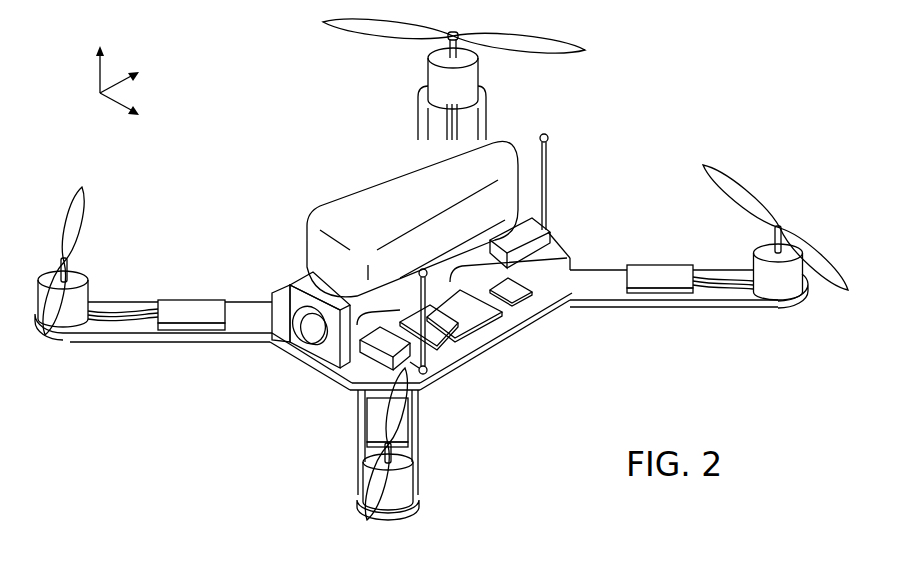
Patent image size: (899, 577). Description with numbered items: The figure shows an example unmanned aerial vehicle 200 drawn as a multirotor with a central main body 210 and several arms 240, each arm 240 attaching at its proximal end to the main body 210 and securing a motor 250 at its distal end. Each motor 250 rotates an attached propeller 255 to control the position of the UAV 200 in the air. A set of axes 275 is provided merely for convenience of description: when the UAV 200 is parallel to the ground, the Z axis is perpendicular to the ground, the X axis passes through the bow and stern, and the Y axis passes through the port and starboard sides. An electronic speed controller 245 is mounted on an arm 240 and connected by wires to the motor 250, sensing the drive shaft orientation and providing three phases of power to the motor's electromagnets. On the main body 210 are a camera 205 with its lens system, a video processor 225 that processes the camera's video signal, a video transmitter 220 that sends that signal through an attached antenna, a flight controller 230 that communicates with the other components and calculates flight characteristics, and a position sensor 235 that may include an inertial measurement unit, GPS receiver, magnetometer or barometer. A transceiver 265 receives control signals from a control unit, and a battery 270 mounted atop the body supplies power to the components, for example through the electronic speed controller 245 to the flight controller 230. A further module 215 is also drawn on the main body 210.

The unmanned aerial vehicle 200 is at (624, 119).
The camera 205 is at (296, 290).
The main body 210 is at (283, 333).
The electronics module 215 is at (385, 360).
The video transmitter 220 is at (430, 372).
The video processor 225 is at (435, 345).
The flight controller 230 is at (477, 315).
The position sensor 235 is at (525, 300).
The arm 240 is at (613, 305).
The electronic speed controller 245 is at (688, 291).
The motor 250 is at (795, 288).
The propeller 255 is at (727, 184).
The transceiver 265 is at (553, 240).
The battery 270 is at (378, 190).
The axes 275 is at (143, 48).